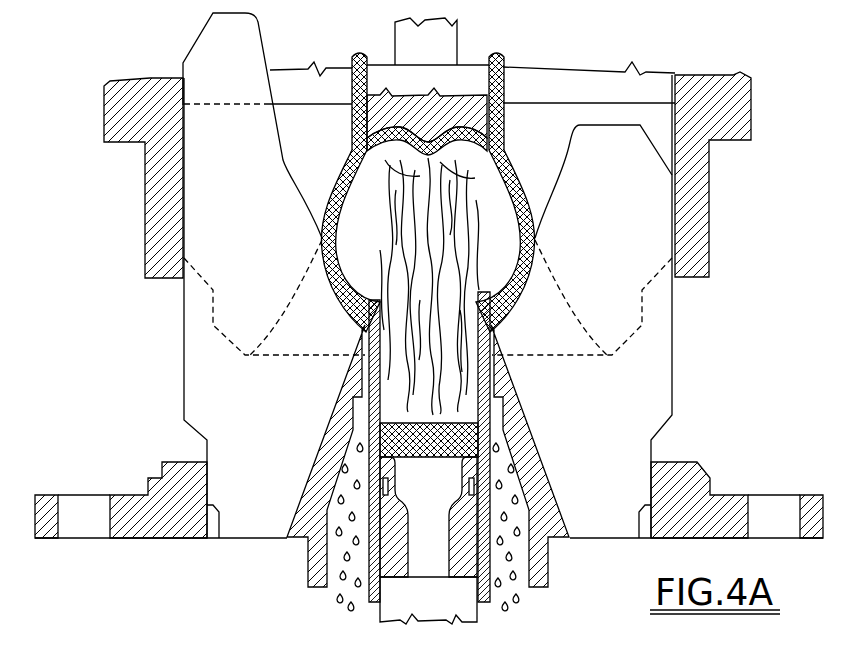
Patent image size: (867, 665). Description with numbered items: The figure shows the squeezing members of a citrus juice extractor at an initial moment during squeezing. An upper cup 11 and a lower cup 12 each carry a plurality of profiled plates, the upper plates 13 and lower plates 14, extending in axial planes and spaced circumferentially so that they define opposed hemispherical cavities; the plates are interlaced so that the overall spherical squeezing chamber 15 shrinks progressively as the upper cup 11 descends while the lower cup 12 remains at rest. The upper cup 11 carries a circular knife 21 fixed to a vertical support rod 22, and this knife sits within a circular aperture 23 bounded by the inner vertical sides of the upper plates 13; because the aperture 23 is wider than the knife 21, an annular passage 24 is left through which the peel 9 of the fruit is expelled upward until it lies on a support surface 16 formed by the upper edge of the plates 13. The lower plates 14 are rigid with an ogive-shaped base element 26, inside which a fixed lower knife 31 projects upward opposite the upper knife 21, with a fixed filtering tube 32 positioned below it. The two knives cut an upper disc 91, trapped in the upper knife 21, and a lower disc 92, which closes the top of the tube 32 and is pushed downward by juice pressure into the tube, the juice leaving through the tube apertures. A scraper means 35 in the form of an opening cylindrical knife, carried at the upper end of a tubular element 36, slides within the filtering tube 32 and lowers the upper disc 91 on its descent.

The peel 9 is at (455, 177).
The upper cup 11 is at (755, 95).
The lower cup 12 is at (708, 458).
The profiled plates 13 is at (218, 332).
The profiled plates 14 is at (207, 33).
The squeezing chamber 15 is at (487, 240).
The support surface 16 is at (620, 103).
The circular knife 21 is at (455, 192).
The vertical support rod 22 is at (398, 30).
The circular aperture 23 is at (353, 140).
The annular passage 24 is at (482, 143).
The base element 26 is at (317, 420).
The lower knife 31 is at (366, 324).
The filtering tube 32 is at (368, 583).
The scraper means 35 is at (468, 470).
The tubular element 36 is at (477, 617).
The upper disc 91 is at (489, 118).
The lower disc 92 is at (462, 422).